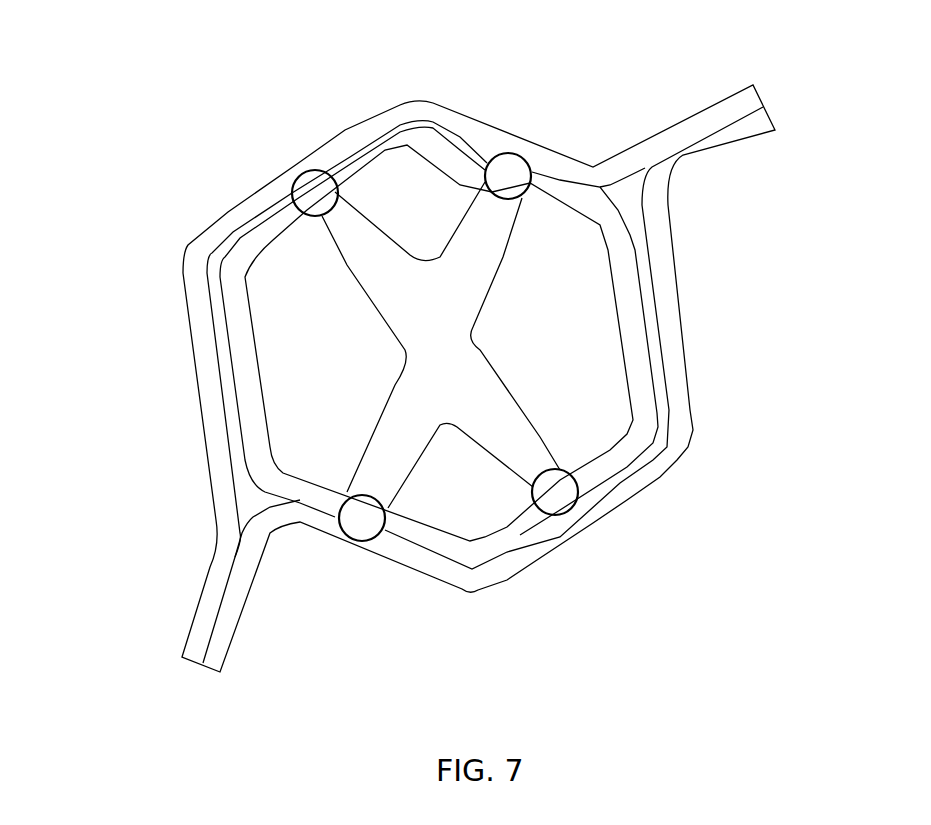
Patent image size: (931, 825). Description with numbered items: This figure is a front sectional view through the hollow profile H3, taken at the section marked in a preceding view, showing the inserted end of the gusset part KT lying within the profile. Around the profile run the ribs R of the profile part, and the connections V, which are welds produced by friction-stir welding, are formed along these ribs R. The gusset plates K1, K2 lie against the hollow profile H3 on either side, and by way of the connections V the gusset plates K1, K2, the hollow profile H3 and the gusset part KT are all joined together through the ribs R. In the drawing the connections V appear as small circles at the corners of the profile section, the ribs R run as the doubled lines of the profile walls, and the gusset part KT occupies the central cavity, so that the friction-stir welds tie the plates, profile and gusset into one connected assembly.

The gusset plate K1 is at (463, 118).
The gusset plate K2 is at (603, 500).
The hollow profile H3 is at (623, 277).
The ribs R is at (482, 202).
The gusset part KT is at (420, 320).
The connections V is at (485, 165).